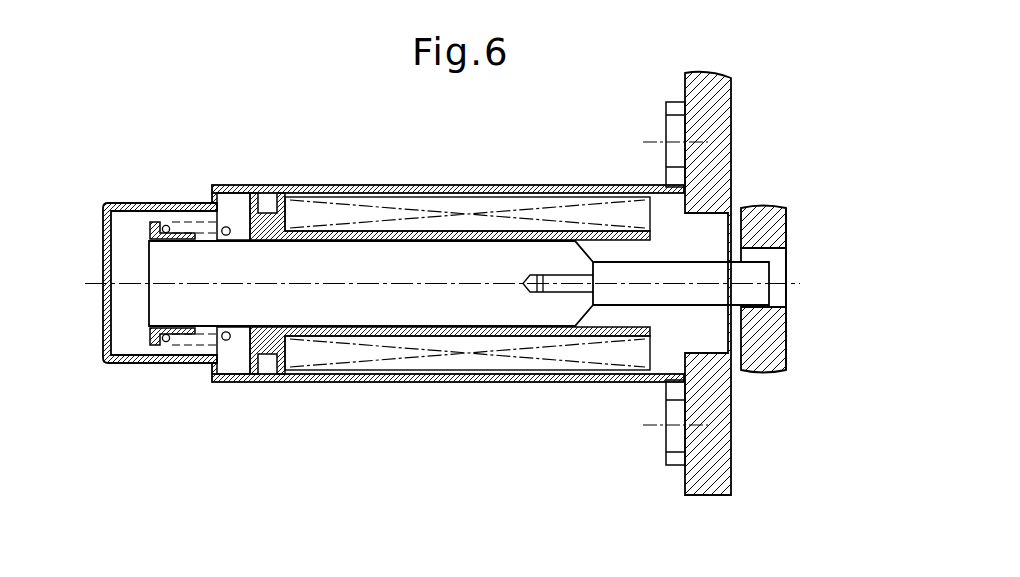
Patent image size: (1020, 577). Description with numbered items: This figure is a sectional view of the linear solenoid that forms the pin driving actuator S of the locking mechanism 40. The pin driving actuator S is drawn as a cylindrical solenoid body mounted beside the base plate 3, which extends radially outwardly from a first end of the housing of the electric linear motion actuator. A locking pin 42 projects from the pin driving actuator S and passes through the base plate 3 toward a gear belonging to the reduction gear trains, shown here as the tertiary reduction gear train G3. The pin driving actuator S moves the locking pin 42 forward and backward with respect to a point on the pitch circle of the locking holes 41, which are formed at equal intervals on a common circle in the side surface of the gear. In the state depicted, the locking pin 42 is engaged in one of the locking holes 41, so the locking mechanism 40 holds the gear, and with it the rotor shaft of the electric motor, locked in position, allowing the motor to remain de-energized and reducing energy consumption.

The pin driving actuator S is at (372, 383).
The locking pin 42 is at (638, 274).
The locking hole 41 is at (777, 270).
The locking mechanism 40 is at (808, 256).
The base plate 3 is at (707, 458).
The tertiary reduction gear train G3 is at (753, 345).